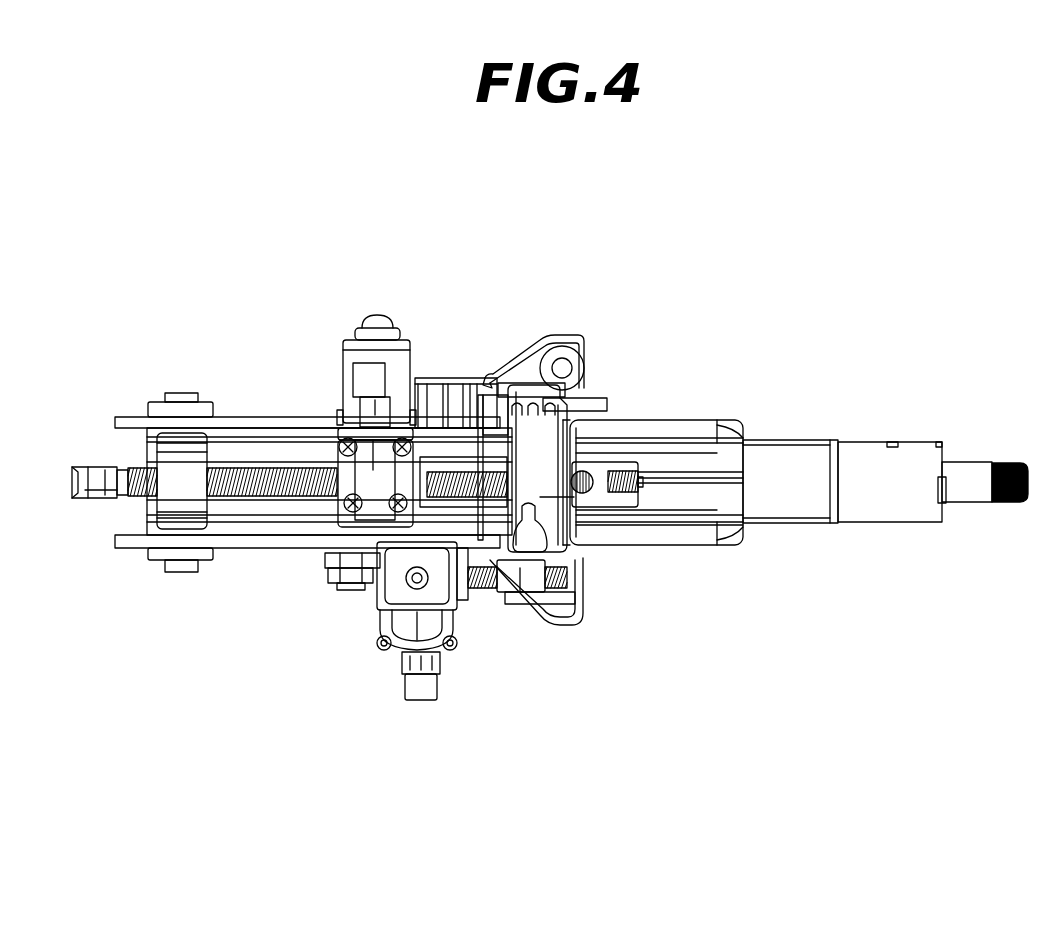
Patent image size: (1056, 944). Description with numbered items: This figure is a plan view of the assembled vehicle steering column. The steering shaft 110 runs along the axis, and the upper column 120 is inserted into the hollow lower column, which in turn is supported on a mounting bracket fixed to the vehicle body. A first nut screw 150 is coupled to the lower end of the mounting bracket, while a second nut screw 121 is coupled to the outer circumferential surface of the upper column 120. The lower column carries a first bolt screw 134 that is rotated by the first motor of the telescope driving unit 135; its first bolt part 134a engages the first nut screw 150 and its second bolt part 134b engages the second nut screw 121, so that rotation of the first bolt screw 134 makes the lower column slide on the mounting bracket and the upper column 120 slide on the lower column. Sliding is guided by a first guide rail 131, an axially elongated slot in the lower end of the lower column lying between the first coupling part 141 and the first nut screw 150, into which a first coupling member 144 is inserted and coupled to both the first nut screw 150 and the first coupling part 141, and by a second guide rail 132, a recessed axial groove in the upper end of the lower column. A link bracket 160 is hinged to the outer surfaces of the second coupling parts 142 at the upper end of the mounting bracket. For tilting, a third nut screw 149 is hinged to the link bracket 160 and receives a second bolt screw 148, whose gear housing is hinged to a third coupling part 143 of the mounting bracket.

The steering shaft 110 is at (973, 467).
The upper column 120 is at (917, 450).
The second nut screw 121 is at (598, 463).
The first guide rail 131 is at (236, 408).
The second guide rail 132 is at (730, 408).
The first bolt screw 134 is at (471, 458).
The first bolt part 134a is at (289, 462).
The second bolt part 134b is at (623, 470).
The telescope driving unit 135 is at (397, 343).
The first coupling part 141 is at (148, 405).
The second coupling part 142 is at (500, 420).
The third coupling part 143 is at (328, 560).
The first coupling member 144 is at (184, 396).
The second bolt screw 148 is at (479, 600).
The third nut screw 149 is at (528, 582).
The first nut screw 150 is at (176, 467).
The link bracket 160 is at (574, 500).